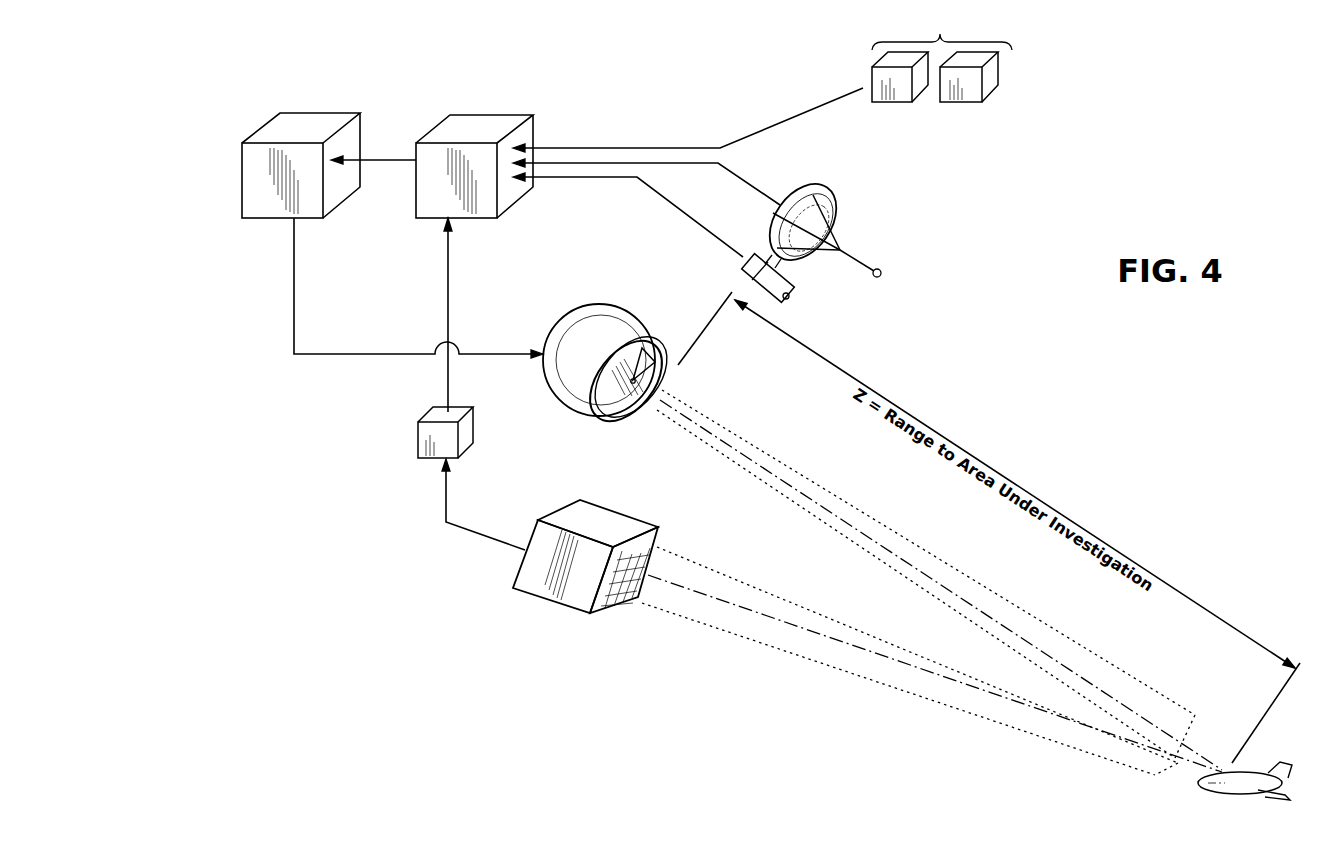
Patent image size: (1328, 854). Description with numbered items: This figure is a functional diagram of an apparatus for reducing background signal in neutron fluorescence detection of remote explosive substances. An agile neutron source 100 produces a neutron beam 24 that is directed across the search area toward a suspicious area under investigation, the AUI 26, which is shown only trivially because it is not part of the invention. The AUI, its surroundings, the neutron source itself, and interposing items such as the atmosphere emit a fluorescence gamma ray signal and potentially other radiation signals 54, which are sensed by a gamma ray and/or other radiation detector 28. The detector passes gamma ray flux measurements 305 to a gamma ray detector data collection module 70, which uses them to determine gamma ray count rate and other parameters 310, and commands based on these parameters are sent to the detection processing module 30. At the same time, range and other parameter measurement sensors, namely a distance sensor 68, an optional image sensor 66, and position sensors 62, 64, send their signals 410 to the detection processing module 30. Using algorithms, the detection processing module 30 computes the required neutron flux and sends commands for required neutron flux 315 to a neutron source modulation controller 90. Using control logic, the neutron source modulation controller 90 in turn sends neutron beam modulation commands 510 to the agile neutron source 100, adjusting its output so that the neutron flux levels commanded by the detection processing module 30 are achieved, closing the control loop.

The neutron source modulation controller 90 is at (295, 127).
The detection processing module 30 is at (482, 127).
The commands for required neutron flux 315 is at (388, 159).
The signals 410 is at (585, 177).
The position sensor 62 is at (898, 100).
The position sensor 64 is at (968, 100).
The distance sensor 68 is at (823, 187).
The image sensor 66 is at (803, 275).
The agile neutron source 100 is at (565, 387).
The neutron beam modulation commands 510 is at (294, 320).
The gamma ray count rate and other parameters 310 is at (448, 323).
The gamma ray detector data collection module 70 is at (425, 440).
The gamma ray flux measurements 305 is at (457, 528).
The gamma ray and/or other radiation detector 28 is at (538, 585).
The neutron beam 24 is at (937, 583).
The fluorescence gamma ray and other radiation signals 54 is at (723, 600).
The AUI 26 is at (1248, 777).